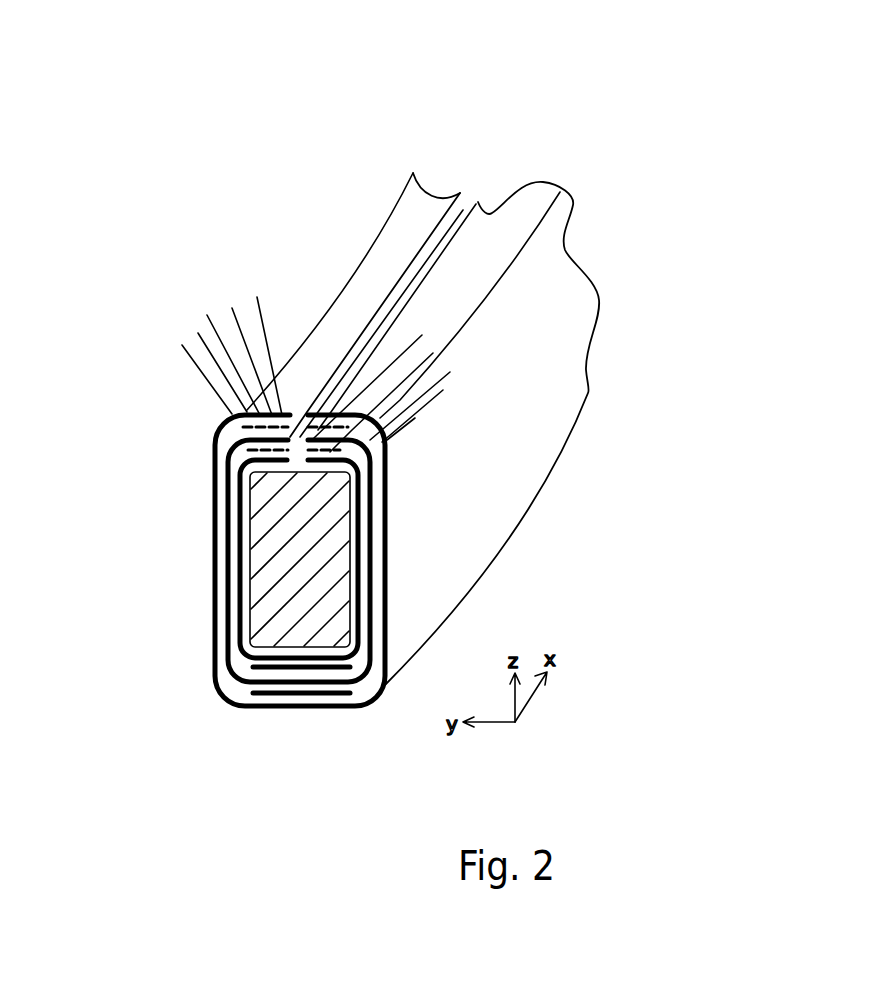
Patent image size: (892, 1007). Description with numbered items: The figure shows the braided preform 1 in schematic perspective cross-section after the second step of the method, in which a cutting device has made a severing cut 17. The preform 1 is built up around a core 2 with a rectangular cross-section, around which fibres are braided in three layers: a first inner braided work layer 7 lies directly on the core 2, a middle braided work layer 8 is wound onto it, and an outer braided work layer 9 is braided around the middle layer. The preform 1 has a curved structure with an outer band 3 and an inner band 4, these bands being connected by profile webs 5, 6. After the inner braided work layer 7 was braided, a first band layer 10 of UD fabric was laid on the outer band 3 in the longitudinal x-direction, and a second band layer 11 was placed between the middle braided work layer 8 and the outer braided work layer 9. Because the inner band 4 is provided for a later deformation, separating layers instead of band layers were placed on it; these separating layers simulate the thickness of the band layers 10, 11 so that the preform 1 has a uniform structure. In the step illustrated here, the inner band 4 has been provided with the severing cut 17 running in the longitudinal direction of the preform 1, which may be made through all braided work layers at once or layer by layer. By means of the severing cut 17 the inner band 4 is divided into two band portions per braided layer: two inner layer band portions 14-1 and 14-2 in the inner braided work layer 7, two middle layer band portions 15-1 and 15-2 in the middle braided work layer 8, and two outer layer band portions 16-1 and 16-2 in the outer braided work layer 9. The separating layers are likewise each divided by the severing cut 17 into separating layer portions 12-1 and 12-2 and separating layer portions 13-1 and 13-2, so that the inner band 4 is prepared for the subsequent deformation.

The preform 1 is at (315, 148).
The core 2 is at (267, 562).
The outer band 3 is at (236, 631).
The inner band 4 is at (378, 267).
The profile web 5 is at (148, 472).
The profile web 6 is at (460, 523).
The inner braided work layer 7 is at (235, 585).
The middle braided work layer 8 is at (223, 617).
The outer braided work layer 9 is at (212, 643).
The first band layer 10 is at (257, 672).
The second band layer 11 is at (278, 698).
The separating layer portion 12-1 is at (207, 315).
The separating layer portion 12-2 is at (443, 390).
The separating layer portion 13-1 is at (232, 308).
The separating layer portion 13-2 is at (433, 353).
The inner layer band portion 14-1 is at (182, 345).
The inner layer band portion 14-2 is at (415, 418).
The middle layer band portion 15-1 is at (198, 333).
The middle layer band portion 15-2 is at (450, 372).
The outer layer band portion 16-1 is at (257, 297).
The outer layer band portion 16-2 is at (422, 335).
The severing cut 17 is at (373, 325).